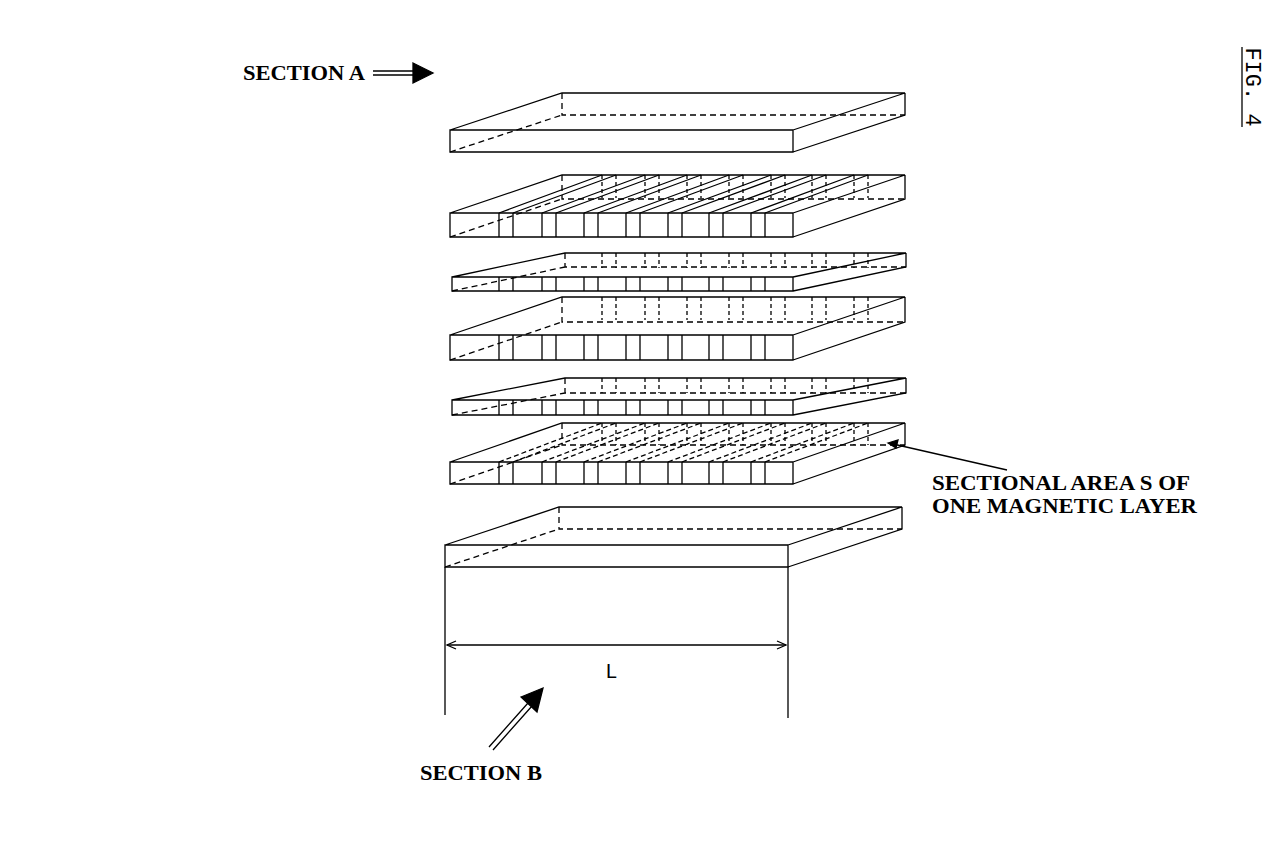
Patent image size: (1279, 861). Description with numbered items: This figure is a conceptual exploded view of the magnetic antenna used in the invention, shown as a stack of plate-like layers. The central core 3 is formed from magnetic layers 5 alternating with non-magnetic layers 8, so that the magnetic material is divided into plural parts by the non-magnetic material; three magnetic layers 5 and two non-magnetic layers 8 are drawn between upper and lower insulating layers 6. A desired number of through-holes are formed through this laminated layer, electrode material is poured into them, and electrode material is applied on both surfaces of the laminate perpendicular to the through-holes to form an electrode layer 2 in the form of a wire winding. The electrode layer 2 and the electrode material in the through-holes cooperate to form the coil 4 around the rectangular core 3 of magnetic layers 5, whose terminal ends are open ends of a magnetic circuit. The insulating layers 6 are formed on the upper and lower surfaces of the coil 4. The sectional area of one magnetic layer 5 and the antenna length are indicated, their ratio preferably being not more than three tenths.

The electrode layer 2 is at (819, 175).
The core 3 is at (145, 207).
The coil 4 is at (915, 165).
The magnetic layer 5 is at (418, 474).
The insulating layer 6 is at (418, 562).
The non-magnetic layer 8 is at (418, 410).